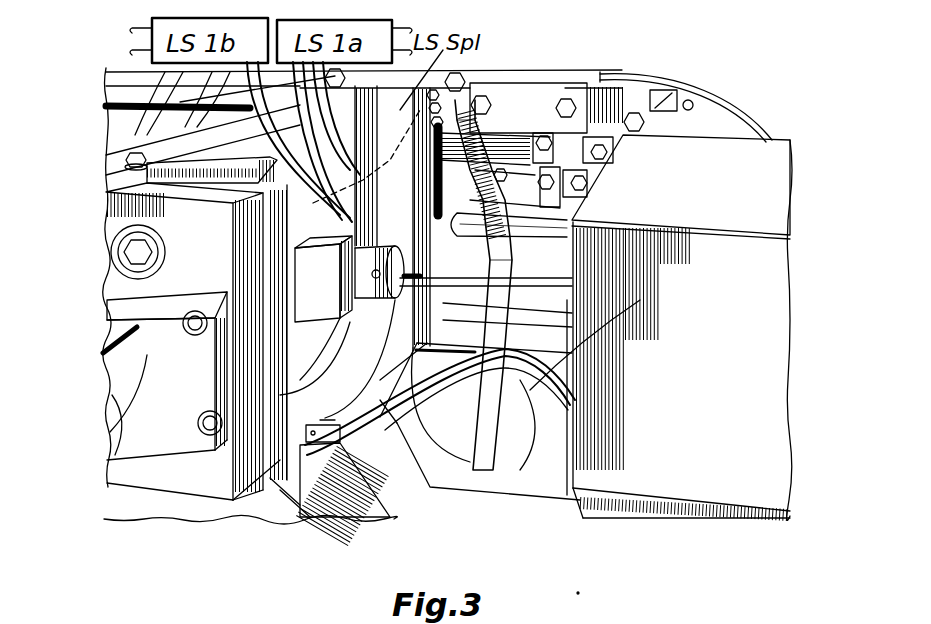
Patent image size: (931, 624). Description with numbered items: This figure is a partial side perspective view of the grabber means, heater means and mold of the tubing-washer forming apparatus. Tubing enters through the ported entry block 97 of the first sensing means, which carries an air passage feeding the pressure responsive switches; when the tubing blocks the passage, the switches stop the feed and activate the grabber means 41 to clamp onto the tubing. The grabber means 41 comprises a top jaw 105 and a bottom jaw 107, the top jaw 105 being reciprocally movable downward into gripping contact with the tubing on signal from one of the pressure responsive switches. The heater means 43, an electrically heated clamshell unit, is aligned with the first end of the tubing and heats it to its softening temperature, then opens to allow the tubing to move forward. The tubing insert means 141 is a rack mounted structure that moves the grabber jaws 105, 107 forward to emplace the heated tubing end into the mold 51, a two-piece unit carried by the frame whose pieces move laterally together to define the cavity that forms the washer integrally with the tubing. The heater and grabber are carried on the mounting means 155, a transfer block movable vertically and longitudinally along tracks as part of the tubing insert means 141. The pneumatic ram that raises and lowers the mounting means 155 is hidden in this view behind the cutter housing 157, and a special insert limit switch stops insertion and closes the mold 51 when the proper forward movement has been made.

The grabber means 41 is at (450, 353).
The heater means 43 is at (305, 275).
The mold 51 is at (195, 222).
The ported entry block 97 is at (335, 300).
The top jaw 105 is at (425, 235).
The bottom jaw 107 is at (435, 337).
The tubing insert means 141 is at (540, 270).
The mounting means 155 is at (512, 330).
The cutter housing 157 is at (703, 378).